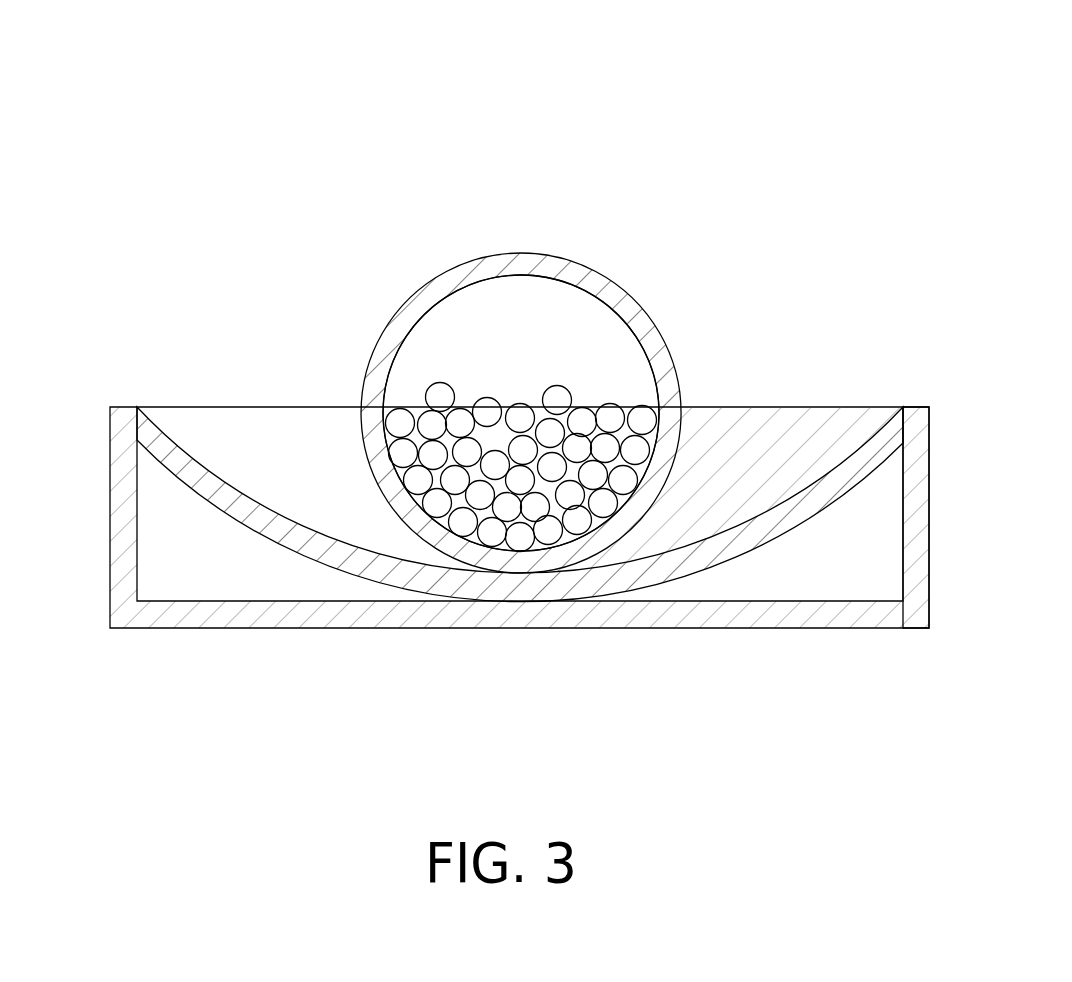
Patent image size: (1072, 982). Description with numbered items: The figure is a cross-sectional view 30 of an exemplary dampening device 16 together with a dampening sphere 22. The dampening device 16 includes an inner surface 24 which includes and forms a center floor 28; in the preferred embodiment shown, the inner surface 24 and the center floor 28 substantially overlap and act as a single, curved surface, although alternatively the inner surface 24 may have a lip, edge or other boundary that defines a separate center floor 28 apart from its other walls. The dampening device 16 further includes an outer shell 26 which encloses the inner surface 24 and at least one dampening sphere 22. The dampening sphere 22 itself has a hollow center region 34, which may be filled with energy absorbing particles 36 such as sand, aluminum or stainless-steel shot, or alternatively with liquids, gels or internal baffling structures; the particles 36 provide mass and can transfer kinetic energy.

The dampening device 16 is at (120, 480).
The dampening sphere 22 is at (630, 292).
The inner surface 24 is at (872, 440).
The outer shell 26 is at (922, 527).
The center floor 28 is at (743, 518).
The cross-sectional view 30 is at (693, 128).
The hollow center region 34 is at (462, 328).
The energy absorbing particles 36 is at (428, 392).